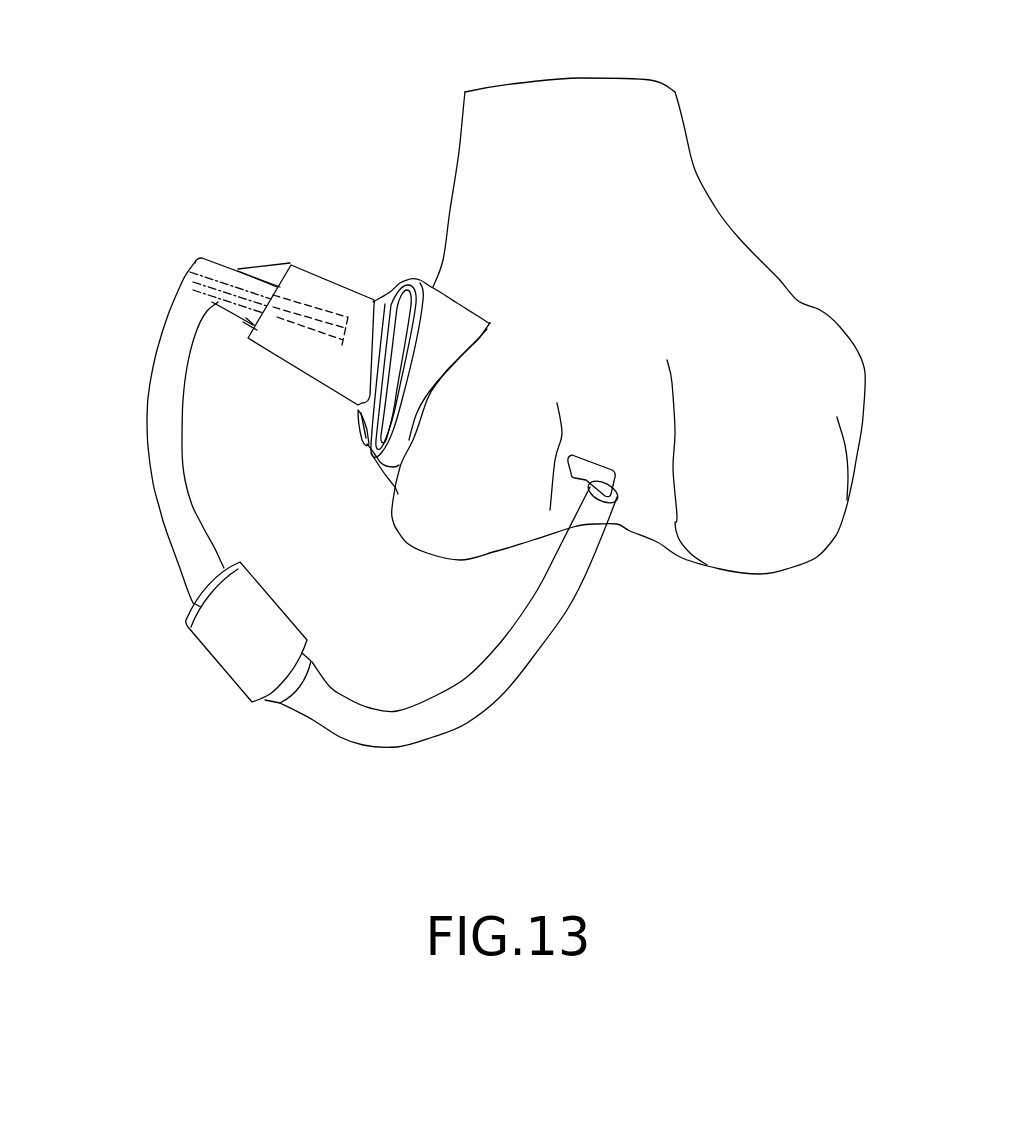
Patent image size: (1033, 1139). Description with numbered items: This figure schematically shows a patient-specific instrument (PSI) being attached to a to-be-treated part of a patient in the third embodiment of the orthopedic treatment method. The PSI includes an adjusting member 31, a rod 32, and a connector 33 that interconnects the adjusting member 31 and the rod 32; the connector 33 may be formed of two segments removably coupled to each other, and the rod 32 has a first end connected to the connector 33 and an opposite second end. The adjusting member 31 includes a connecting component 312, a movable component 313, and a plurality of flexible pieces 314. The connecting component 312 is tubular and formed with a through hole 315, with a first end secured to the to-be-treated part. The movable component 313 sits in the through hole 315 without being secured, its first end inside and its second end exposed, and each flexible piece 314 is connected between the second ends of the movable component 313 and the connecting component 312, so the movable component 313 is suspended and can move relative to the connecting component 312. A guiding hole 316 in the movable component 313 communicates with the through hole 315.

The adjusting member 31 is at (315, 263).
The connecting component 312 is at (443, 320).
The movable component 313 is at (327, 317).
The flexible pieces 314 is at (263, 273).
The through hole 315 is at (347, 363).
The guiding hole 316 is at (196, 262).
The rod 32 is at (607, 480).
The connector 33 is at (181, 515).